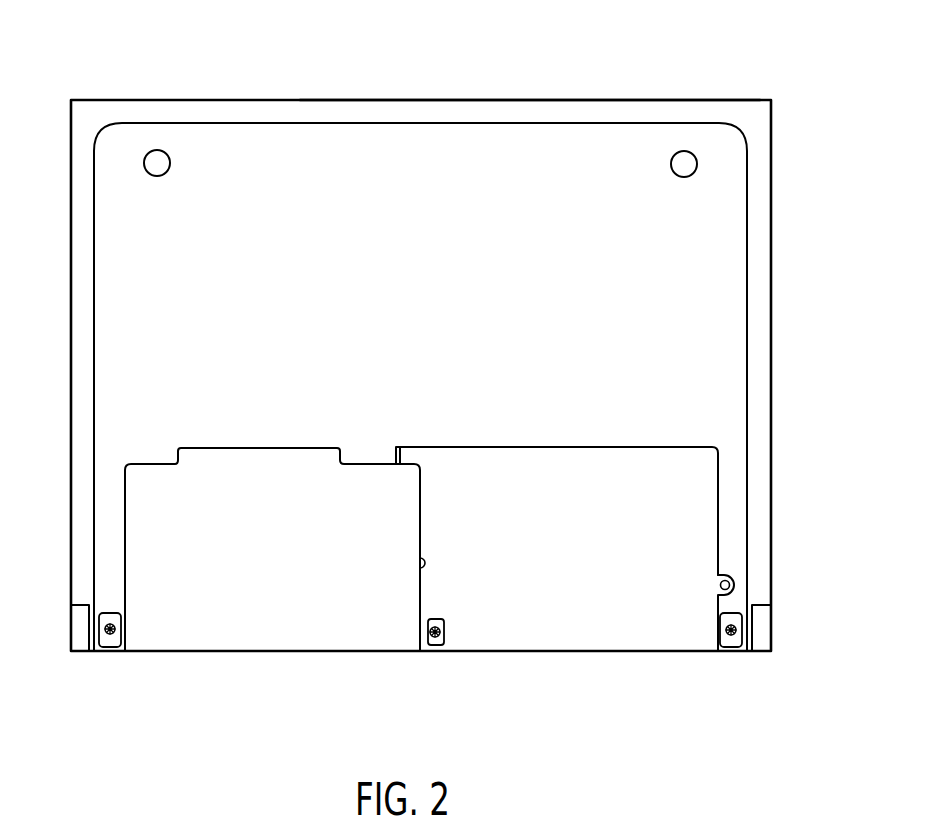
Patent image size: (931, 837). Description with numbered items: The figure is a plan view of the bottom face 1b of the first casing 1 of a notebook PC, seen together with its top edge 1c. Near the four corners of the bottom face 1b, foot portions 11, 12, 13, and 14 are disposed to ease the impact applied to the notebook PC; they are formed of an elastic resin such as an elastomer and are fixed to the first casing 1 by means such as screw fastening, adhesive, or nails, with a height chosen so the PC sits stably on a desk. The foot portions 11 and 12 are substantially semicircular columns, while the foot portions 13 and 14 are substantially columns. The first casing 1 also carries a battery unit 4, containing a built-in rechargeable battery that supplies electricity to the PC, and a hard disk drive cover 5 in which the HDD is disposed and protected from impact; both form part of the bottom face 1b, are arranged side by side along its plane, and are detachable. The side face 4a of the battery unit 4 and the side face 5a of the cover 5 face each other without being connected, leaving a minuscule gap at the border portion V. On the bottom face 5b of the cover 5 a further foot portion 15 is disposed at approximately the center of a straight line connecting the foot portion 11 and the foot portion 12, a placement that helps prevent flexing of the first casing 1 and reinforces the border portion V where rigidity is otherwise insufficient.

The first casing 1 is at (771, 163).
The bottom face 1b is at (697, 337).
The top edge of housing 1c is at (543, 100).
The battery unit 4 is at (252, 607).
The side face of the battery unit 4a is at (423, 527).
The hard disk drive cover 5 is at (555, 607).
The side face of the cover 5a is at (418, 602).
The bottom face of the cover 5b is at (622, 568).
The foot portion 11 is at (110, 648).
The foot portion 12 is at (731, 648).
The foot portion 13 is at (157, 163).
The foot portion 14 is at (684, 164).
The foot portion 15 is at (440, 634).
The border portion V is at (420, 655).